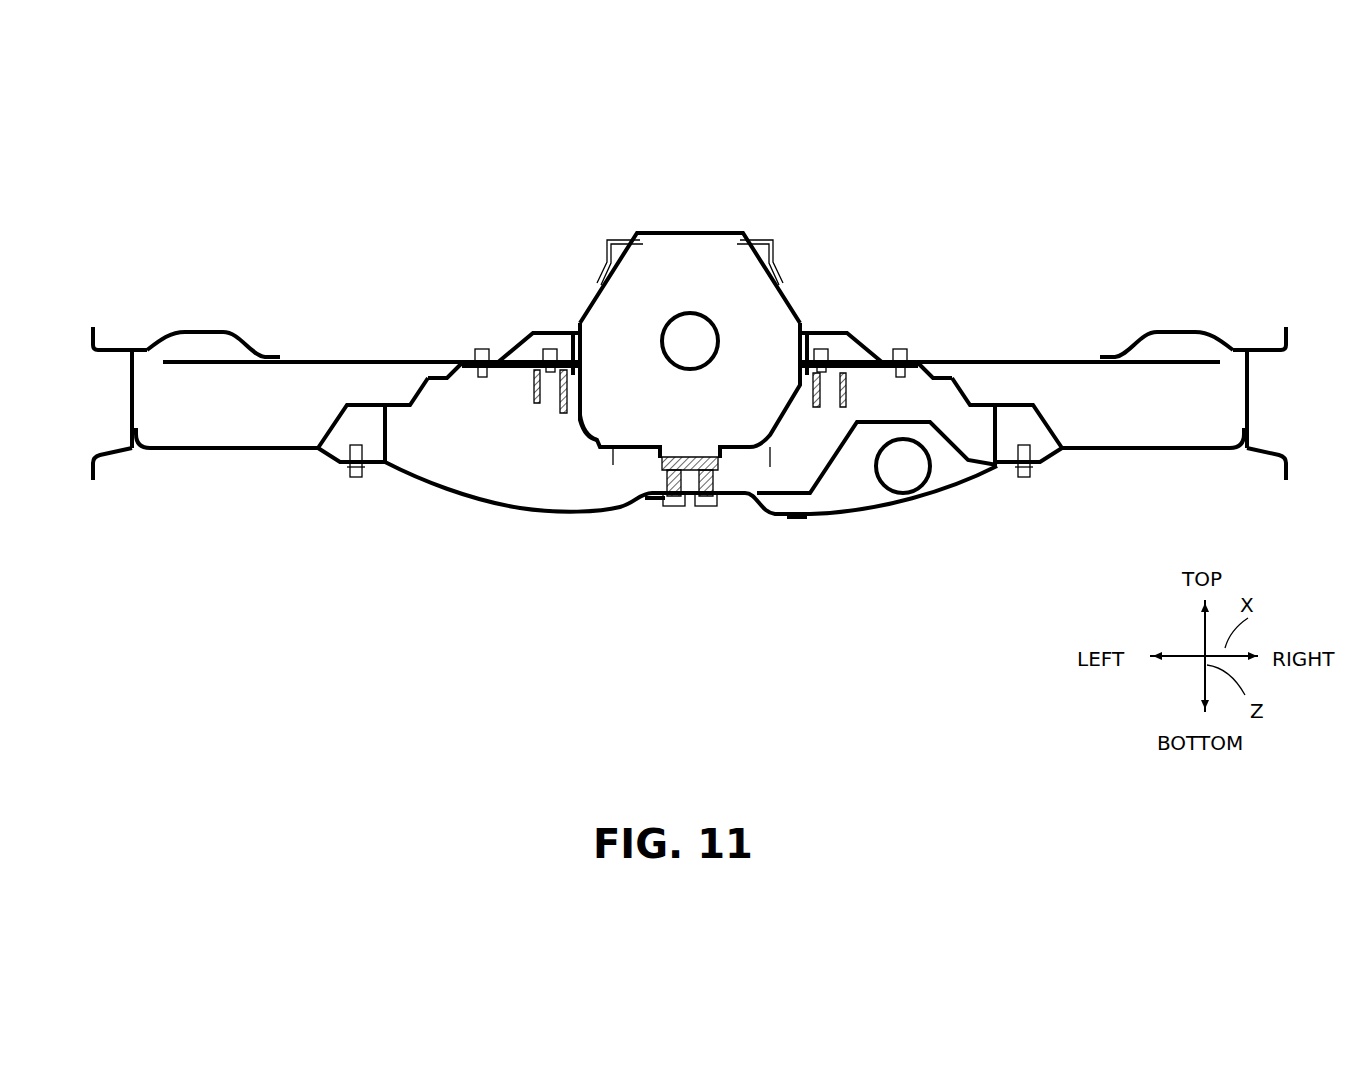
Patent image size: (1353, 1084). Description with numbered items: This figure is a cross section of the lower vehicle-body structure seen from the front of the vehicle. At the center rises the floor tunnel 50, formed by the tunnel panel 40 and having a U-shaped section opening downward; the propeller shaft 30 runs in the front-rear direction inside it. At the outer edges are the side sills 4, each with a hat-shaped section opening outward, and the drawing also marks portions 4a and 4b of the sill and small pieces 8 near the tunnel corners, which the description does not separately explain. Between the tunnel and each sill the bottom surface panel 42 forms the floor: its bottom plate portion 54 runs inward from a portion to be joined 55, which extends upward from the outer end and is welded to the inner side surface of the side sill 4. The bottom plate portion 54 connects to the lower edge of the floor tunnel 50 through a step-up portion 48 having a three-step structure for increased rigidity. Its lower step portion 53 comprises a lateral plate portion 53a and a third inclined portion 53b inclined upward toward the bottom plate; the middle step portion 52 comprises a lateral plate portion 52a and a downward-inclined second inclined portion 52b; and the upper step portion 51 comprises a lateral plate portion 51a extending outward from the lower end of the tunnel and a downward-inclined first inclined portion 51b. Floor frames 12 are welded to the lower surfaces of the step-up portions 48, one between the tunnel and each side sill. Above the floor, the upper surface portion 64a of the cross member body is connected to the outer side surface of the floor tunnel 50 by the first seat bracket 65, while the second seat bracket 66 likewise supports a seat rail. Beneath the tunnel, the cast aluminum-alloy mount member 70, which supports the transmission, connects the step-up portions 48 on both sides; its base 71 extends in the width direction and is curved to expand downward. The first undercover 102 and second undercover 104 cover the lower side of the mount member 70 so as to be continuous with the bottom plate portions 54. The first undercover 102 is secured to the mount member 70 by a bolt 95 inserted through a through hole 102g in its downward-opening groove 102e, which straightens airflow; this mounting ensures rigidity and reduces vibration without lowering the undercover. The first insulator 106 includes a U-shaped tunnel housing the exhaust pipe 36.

The side sill 4 is at (685, 403).
The lower flange of side wall 4a is at (687, 440).
The upper flange of side wall 4b is at (122, 356).
The tunnel corner reinforcement 8 is at (610, 238).
The floor frame 12 is at (388, 440).
The propeller shaft 30 is at (700, 314).
The exhaust pipe 36 is at (905, 494).
The tunnel panel 40 is at (690, 301).
The bottom surface panel 42 is at (690, 482).
The step-up portion 48 is at (689, 278).
The floor tunnel 50 is at (715, 232).
The upper step portion 51 is at (690, 312).
The lateral plate portion 51a is at (520, 346).
The first inclined portion 51b is at (455, 362).
The middle step portion 52 is at (689, 311).
The lateral plate portion 52a is at (450, 372).
The second inclined portion 52b is at (420, 390).
The lower step portion 53 is at (692, 501).
The lateral plate portion 53a is at (360, 412).
The third inclined portion 53b is at (342, 458).
The bottom plate portion 54 is at (203, 452).
The portion to be joined 55 is at (145, 452).
The upper surface portion 64a is at (300, 360).
The first seat bracket 65 is at (560, 330).
The second seat bracket 66 is at (152, 342).
The mount member 70 is at (624, 487).
The base 71 is at (577, 433).
The bolt 95 is at (672, 507).
The first undercover 102 is at (597, 529).
The groove 102e is at (650, 500).
The through hole 102g is at (690, 472).
The second undercover 104 is at (865, 515).
The first insulator 106 is at (952, 450).